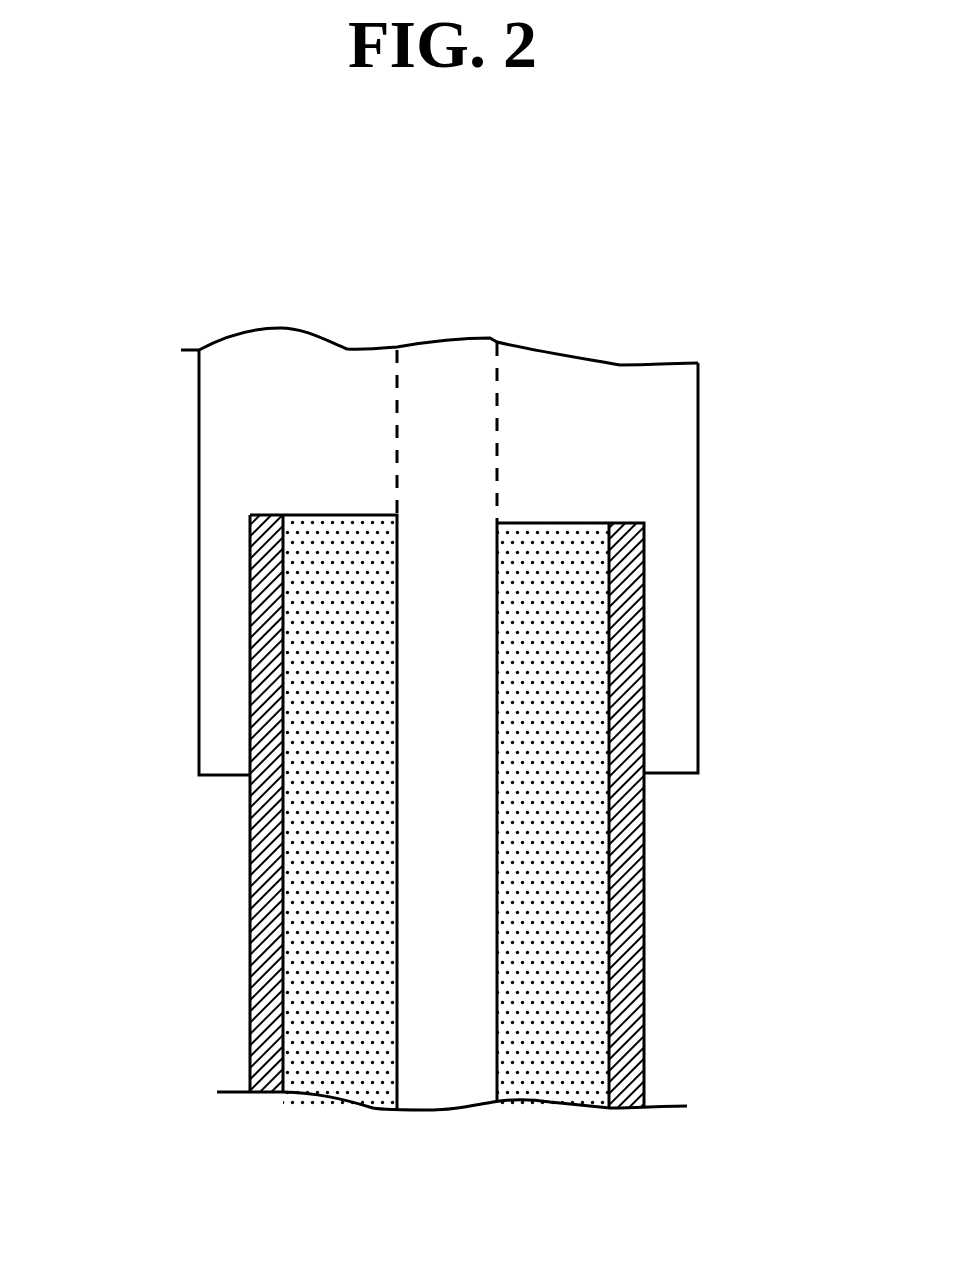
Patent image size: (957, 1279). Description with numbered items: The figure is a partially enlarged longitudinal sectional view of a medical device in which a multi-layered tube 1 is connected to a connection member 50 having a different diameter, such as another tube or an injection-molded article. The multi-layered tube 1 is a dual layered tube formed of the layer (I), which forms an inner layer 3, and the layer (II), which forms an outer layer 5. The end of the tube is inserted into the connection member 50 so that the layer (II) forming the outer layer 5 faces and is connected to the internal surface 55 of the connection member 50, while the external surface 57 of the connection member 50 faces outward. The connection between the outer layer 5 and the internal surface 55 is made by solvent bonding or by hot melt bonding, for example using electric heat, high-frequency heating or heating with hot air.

The multi-layered tube 1 is at (445, 812).
The inner layer 3 is at (562, 910).
The outer layer 5 is at (630, 1015).
The connection member 50 is at (596, 349).
The internal surface of the connection member 55 is at (644, 678).
The external surface of the connection member 57 is at (698, 467).